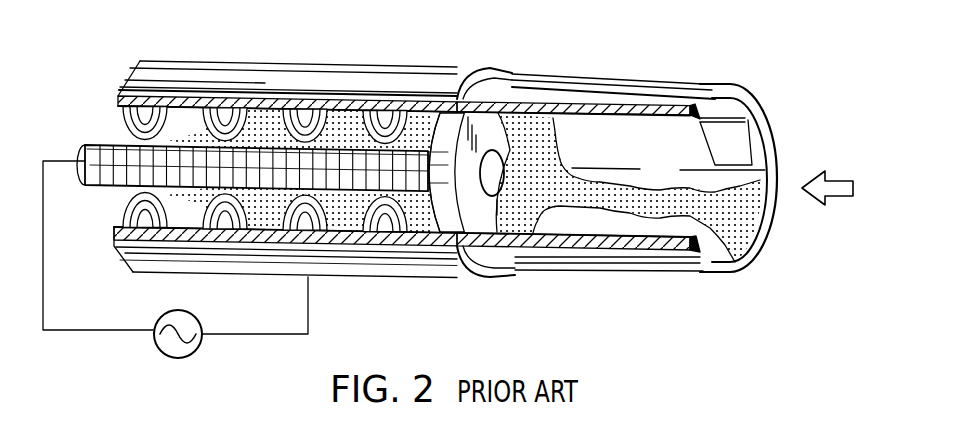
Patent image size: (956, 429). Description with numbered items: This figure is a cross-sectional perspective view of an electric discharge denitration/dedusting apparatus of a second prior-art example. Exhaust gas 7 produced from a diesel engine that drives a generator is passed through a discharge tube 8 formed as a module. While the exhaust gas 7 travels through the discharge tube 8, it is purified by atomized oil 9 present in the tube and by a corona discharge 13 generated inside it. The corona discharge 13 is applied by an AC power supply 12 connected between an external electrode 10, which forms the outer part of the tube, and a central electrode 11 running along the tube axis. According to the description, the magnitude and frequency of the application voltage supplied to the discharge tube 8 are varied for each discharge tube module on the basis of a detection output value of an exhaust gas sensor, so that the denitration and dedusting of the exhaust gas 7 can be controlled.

The exhaust gas 7 is at (846, 178).
The discharge tube 8 is at (366, 66).
The atomized oil 9 is at (594, 210).
The external electrode 10 is at (381, 273).
The central electrode 11 is at (92, 186).
The AC power supply 12 is at (172, 358).
The corona discharge 13 is at (228, 112).